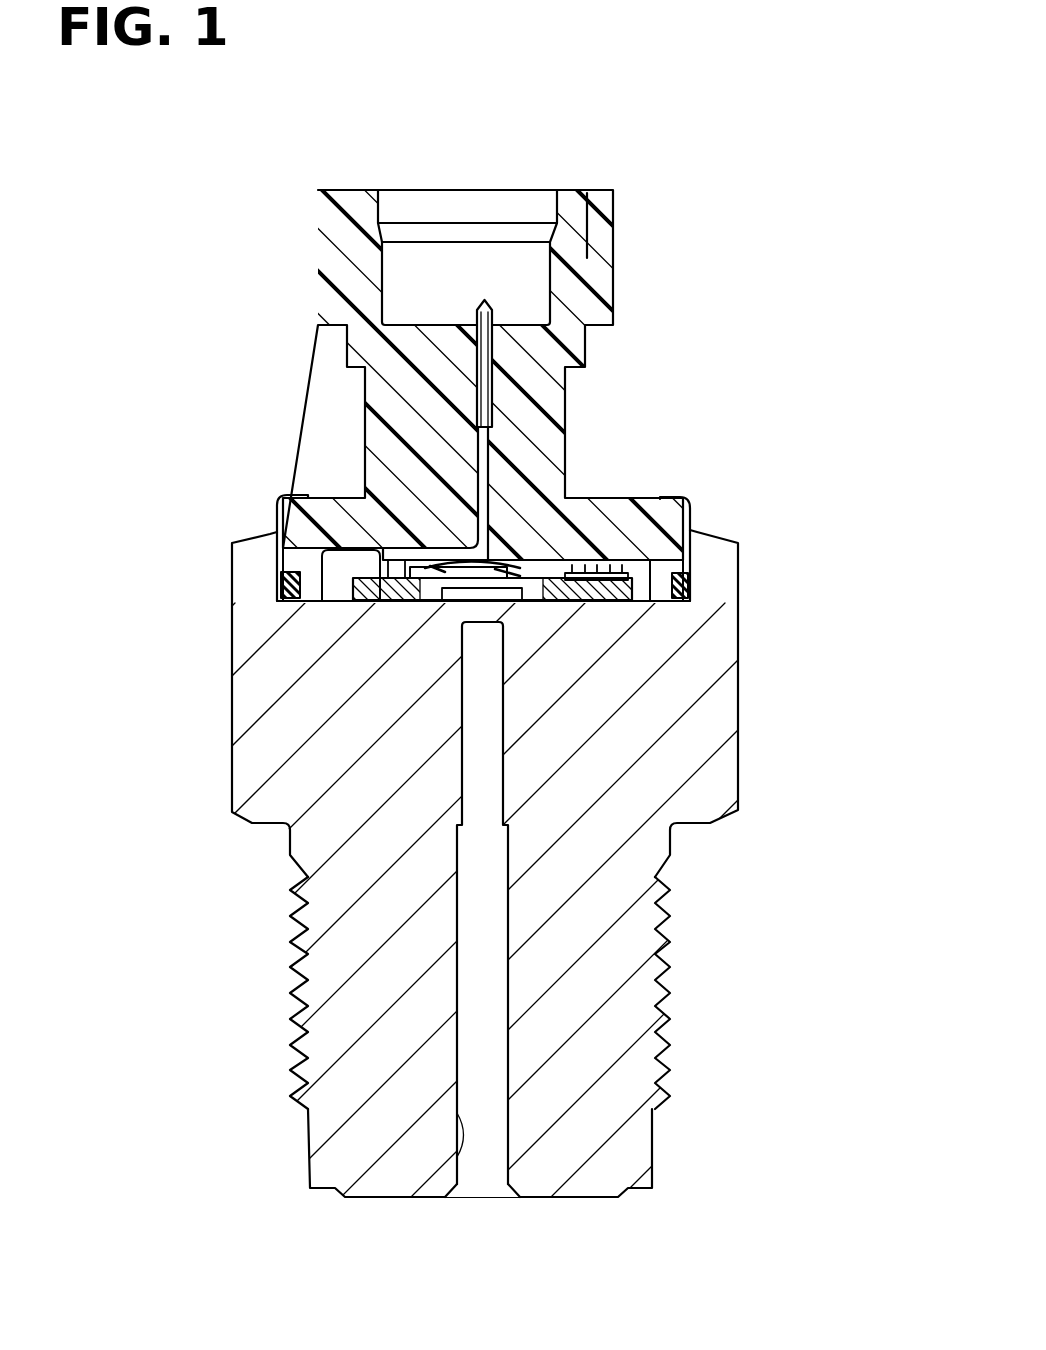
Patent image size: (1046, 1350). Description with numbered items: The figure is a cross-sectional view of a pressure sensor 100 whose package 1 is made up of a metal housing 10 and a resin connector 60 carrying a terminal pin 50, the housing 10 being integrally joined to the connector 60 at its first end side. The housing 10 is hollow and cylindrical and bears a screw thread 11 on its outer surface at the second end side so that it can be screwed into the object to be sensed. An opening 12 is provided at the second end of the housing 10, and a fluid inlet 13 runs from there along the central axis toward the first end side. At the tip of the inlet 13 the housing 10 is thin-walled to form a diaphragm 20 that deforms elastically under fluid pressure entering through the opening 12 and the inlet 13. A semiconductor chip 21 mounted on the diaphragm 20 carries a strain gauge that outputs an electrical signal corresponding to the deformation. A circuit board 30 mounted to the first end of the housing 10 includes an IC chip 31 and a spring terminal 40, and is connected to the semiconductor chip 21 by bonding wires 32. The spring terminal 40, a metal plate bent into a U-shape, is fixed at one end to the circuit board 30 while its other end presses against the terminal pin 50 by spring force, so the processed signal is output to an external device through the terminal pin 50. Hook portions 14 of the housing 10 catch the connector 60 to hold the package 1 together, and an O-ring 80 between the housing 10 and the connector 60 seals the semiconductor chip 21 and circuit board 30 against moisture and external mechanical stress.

The pressure sensor 100 is at (732, 340).
The package 1 is at (690, 487).
The housing 10 is at (744, 776).
The screw thread 11 is at (672, 972).
The opening 12 is at (484, 1207).
The fluid inlet 13 is at (438, 1192).
The hook portions 14 is at (297, 497).
The diaphragm 20 is at (470, 596).
The semiconductor chip 21 is at (480, 612).
The circuit board 30 is at (612, 592).
The IC chip 31 is at (628, 576).
The bonding wires 32 is at (525, 565).
The spring terminal 40 is at (490, 545).
The terminal pin 50 is at (487, 455).
The connector 60 is at (575, 356).
The O-ring 80 is at (689, 583).